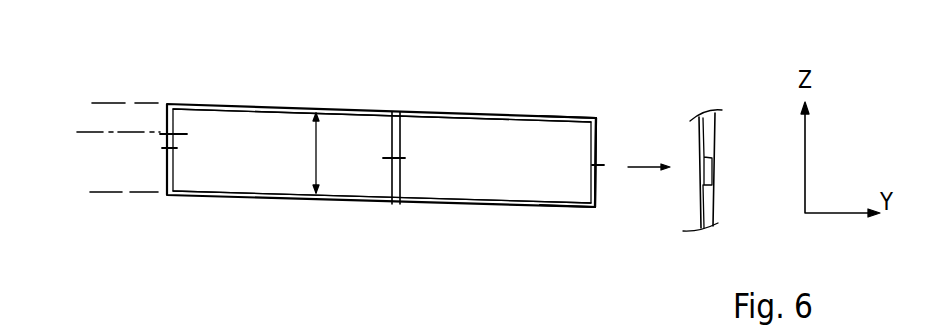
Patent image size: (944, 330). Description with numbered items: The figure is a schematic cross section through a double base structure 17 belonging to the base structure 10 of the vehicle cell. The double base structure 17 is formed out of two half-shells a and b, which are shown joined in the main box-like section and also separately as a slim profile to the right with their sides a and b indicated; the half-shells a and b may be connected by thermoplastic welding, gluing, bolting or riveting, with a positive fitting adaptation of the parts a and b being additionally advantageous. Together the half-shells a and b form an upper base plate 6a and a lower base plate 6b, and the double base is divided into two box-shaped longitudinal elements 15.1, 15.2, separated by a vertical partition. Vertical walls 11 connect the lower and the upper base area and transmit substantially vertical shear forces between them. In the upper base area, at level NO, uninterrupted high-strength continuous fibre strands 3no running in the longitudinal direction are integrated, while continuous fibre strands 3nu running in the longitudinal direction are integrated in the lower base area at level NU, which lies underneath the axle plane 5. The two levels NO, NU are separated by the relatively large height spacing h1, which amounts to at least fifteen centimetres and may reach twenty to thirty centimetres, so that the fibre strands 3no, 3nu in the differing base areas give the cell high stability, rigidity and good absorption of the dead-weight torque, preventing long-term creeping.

The base structure 10 is at (190, 104).
The box-shaped longitudinal element 15.1 is at (274, 104).
The box-shaped longitudinal element 15.2 is at (497, 110).
The upper base plate 6a is at (357, 108).
The lower base plate 6b is at (355, 204).
The continuous fibre strands running in longitudinal direction 3no is at (580, 114).
The continuous fibre strands running in longitudinal direction 3nu is at (576, 209).
The double base structure 17 is at (598, 117).
The walls 11 is at (173, 172).
The axle plane 5 is at (90, 132).
The upper base area level NO is at (104, 90).
The lower base area level NU is at (100, 190).
The height spacing h1 is at (315, 153).
The half-shell a is at (598, 128).
The half-shell b is at (598, 192).